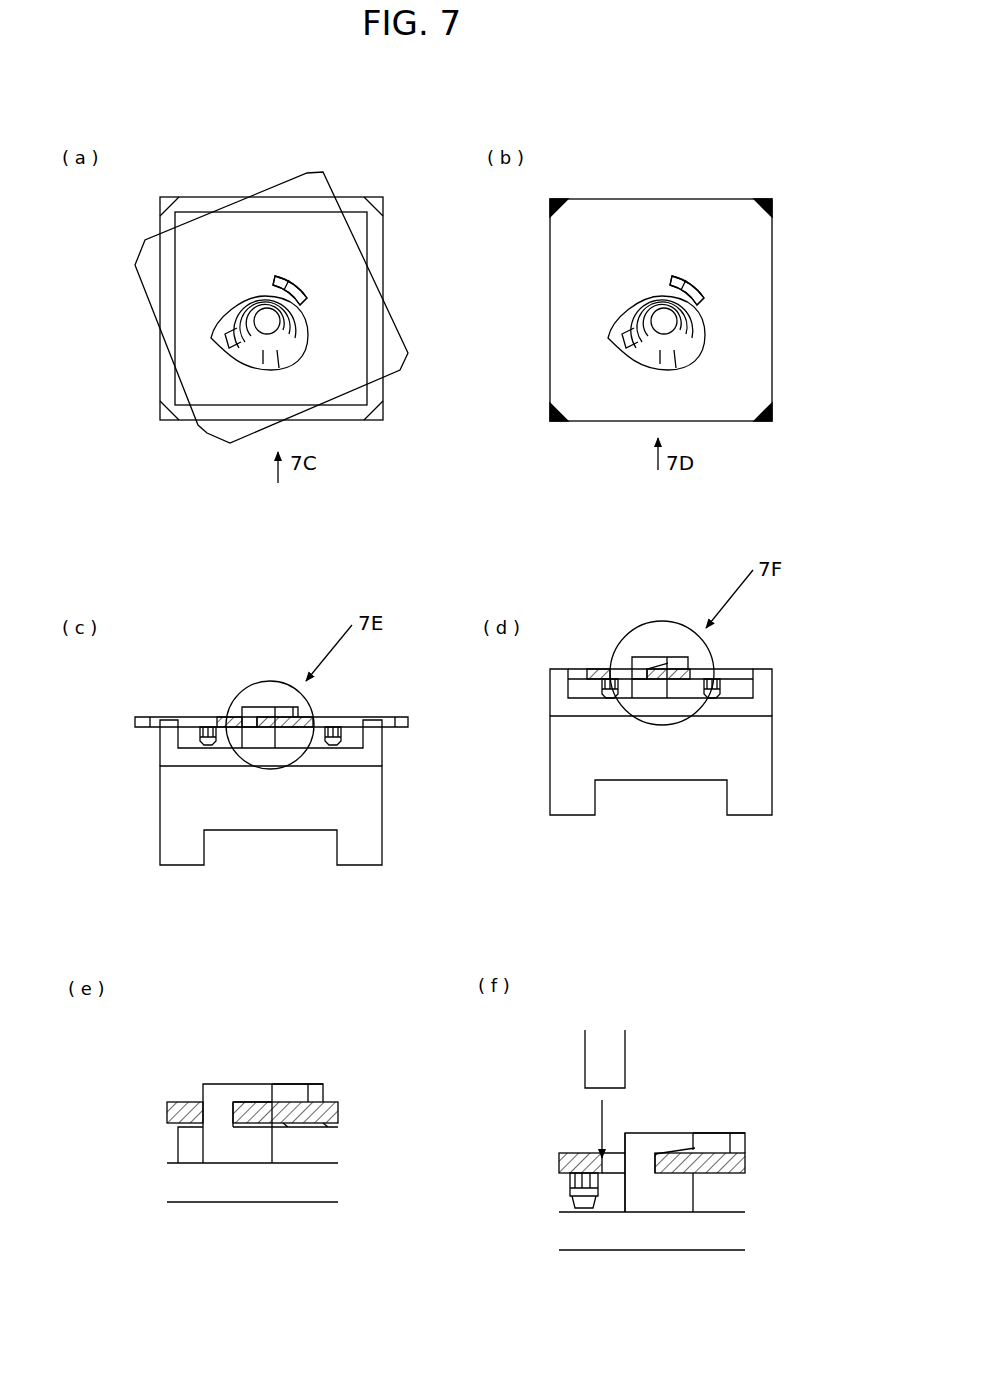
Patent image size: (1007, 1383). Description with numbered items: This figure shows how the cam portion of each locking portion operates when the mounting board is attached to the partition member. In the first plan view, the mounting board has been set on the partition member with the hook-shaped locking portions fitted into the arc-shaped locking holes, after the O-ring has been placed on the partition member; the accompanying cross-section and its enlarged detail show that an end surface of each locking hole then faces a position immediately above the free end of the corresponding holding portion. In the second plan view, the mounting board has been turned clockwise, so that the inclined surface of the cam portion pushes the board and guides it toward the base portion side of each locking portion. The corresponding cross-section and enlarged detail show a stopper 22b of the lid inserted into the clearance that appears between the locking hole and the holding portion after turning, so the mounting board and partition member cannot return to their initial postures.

The stopper 22b is at (597, 1055).